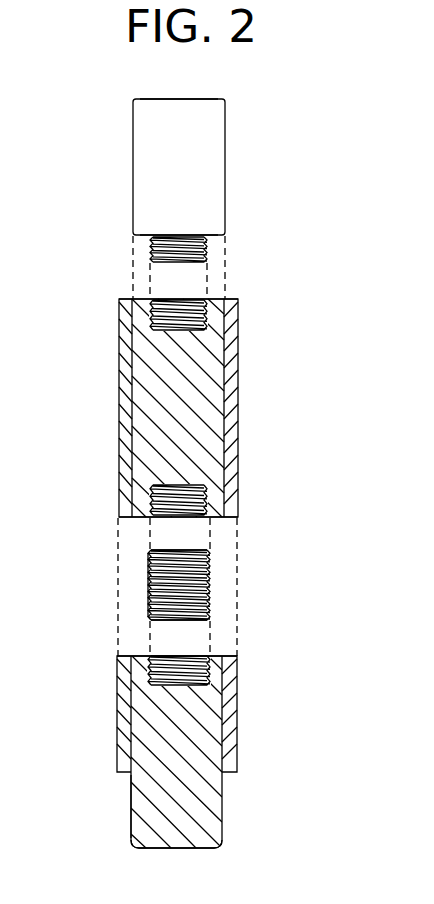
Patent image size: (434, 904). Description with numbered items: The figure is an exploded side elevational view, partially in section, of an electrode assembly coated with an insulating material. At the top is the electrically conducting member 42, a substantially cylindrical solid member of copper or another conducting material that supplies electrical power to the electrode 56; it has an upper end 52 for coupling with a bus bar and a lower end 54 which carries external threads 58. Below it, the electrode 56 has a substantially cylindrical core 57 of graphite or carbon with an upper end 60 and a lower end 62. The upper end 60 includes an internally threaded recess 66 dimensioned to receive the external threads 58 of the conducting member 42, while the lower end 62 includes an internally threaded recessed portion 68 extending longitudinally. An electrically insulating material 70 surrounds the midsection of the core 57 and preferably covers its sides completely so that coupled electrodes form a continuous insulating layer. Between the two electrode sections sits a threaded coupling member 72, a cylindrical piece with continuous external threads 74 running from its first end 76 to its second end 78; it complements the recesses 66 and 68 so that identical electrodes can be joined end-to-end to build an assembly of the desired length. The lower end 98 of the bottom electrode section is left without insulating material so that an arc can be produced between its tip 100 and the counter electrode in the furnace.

The electrically conducting member 42 is at (232, 156).
The upper end 52 is at (205, 99).
The lower end 54 is at (225, 226).
The external threads 58 is at (204, 252).
The electrode 56 is at (250, 416).
The upper end 60 is at (238, 300).
The lower end 62 is at (238, 511).
The internally threaded recess 66 is at (172, 305).
The internally threaded recessed portion 68 is at (168, 512).
The electrode core 57 is at (178, 398).
The threaded coupling member 72 is at (226, 578).
The external threads 74 is at (148, 579).
The first end 76 is at (187, 548).
The second end 78 is at (188, 621).
The electrically insulating material 70 is at (238, 720).
The lower end 98 is at (131, 803).
The tip 100 is at (133, 847).